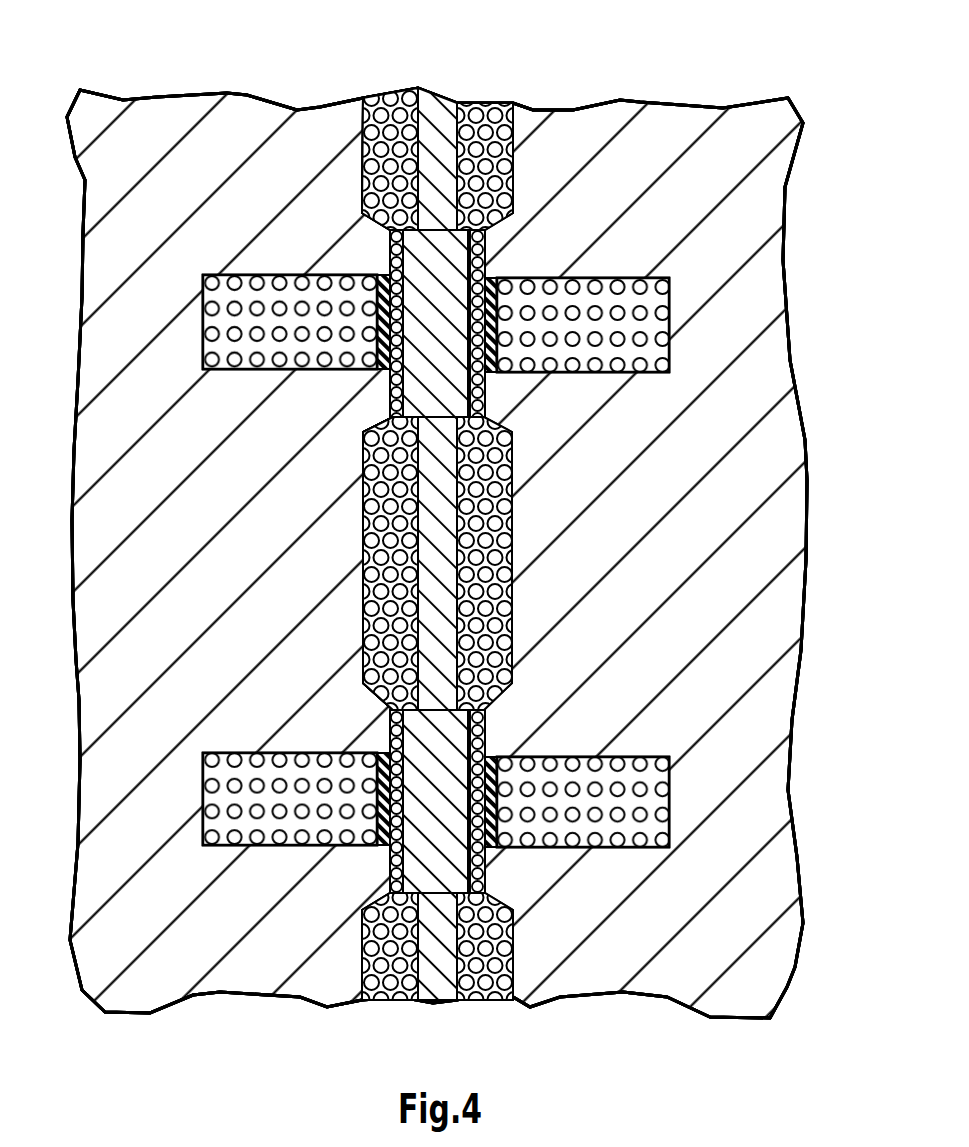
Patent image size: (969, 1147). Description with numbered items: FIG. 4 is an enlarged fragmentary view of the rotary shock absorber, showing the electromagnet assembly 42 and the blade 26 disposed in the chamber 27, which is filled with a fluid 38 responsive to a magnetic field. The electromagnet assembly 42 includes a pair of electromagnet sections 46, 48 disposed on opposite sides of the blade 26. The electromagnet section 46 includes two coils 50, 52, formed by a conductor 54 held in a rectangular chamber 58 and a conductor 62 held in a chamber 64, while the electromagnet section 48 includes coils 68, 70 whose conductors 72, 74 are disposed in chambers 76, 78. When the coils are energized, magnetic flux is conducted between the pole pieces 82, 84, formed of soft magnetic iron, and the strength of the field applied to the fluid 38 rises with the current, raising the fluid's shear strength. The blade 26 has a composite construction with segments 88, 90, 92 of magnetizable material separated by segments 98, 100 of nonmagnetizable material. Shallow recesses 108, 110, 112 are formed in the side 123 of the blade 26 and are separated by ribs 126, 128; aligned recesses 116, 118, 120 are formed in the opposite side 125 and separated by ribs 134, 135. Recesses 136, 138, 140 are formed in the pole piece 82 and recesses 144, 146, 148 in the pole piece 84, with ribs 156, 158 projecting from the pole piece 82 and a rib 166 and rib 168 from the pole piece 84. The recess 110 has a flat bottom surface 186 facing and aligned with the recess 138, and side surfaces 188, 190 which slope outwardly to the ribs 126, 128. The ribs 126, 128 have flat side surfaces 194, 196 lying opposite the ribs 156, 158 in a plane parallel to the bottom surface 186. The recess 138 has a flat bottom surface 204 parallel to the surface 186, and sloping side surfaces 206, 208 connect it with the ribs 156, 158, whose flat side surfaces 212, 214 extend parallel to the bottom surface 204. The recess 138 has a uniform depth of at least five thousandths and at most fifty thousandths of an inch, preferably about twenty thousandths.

The electromagnet assembly 42 is at (120, 78).
The electromagnet section 46 is at (118, 228).
The electromagnet section 48 is at (740, 173).
The pole piece 82 is at (107, 153).
The pole piece 84 is at (692, 118).
The blade 26 is at (362, 100).
The chamber 27 is at (396, 1003).
The recess 108 is at (398, 145).
The side of blade 123 is at (403, 155).
The recess 136 is at (370, 200).
The recess 116 is at (470, 160).
The side of blade 125 is at (436, 162).
The segment of magnetizable material 88 is at (460, 152).
The recess 144 is at (515, 160).
The rib 156 is at (388, 238).
The flat side surface 212 is at (384, 250).
The rib 126 is at (392, 397).
The flat side surface 194 is at (380, 272).
The segment of nonmagnetizable material 98 is at (487, 262).
The rib 134 is at (480, 388).
The rib 166 is at (487, 268).
The recess 110 is at (410, 520).
The segment of magnetizable material 90 is at (450, 567).
The conductor 54 is at (232, 308).
The coil 50 is at (200, 331).
The chamber 58 is at (205, 355).
The conductor 72 is at (639, 310).
The coil 68 is at (672, 340).
The chamber 76 is at (670, 352).
The sloping side surface 206 is at (385, 433).
The side surface 188 is at (363, 452).
The recess 138 is at (363, 520).
The flat bottom surface 186 is at (375, 553).
The fluid responsive to magnetic field 38 is at (365, 590).
The flat bottom surface 204 is at (362, 648).
The side surface 190 is at (362, 674).
The recess 146 is at (513, 455).
The recess 118 is at (463, 600).
The rib 158 is at (388, 735).
The sloping side surface 208 is at (392, 703).
The flat side surface 196 is at (388, 860).
The rib 128 is at (390, 873).
The flat side surface 214 is at (388, 745).
The rib 168 is at (490, 737).
The segment of nonmagnetizable material 100 is at (480, 862).
The rib 135 is at (500, 757).
The conductor 62 is at (232, 783).
The coil 52 is at (200, 810).
The chamber 64 is at (205, 835).
The conductor 74 is at (617, 788).
The coil 70 is at (672, 812).
The chamber 78 is at (670, 833).
The recess 140 is at (362, 965).
The recess 112 is at (362, 945).
The segment of magnetizable material 92 is at (435, 970).
The recess 120 is at (513, 930).
The recess 148 is at (513, 978).